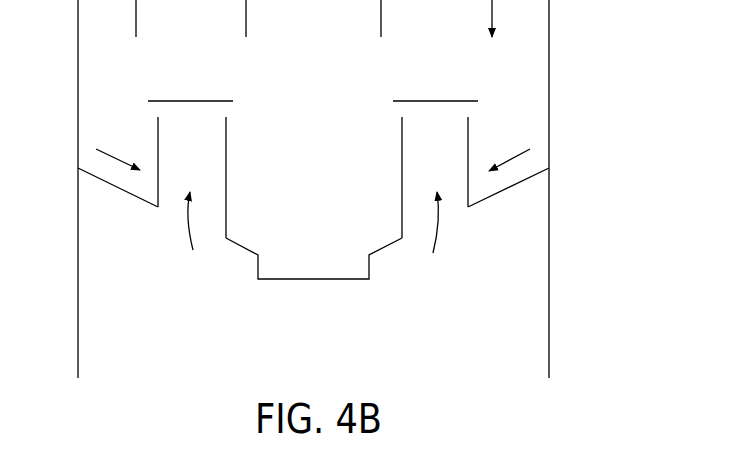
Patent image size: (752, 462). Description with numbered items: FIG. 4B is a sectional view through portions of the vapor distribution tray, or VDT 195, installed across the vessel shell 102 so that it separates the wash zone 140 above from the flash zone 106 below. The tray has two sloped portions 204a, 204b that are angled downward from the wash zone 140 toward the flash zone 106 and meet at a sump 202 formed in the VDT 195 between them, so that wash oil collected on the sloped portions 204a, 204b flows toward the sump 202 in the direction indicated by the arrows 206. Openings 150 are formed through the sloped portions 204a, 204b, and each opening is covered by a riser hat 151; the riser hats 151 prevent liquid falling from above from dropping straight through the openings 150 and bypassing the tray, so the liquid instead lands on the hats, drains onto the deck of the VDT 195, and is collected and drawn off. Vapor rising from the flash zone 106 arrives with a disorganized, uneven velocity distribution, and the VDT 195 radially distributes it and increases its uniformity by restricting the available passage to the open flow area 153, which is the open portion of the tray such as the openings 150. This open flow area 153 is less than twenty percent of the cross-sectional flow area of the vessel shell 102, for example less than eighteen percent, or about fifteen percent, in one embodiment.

The vessel shell 102 is at (549, 53).
The flash zone 106 is at (332, 357).
The wash zone 140 is at (327, 85).
The openings 150 is at (208, 157).
The riser hat 151 is at (433, 101).
The open flow area 153 is at (310, 238).
The VDT 195 is at (582, 146).
The sump 202 is at (355, 280).
The sloped portion 204a is at (495, 195).
The sloped portion 204b is at (115, 185).
The arrows 206 is at (113, 155).